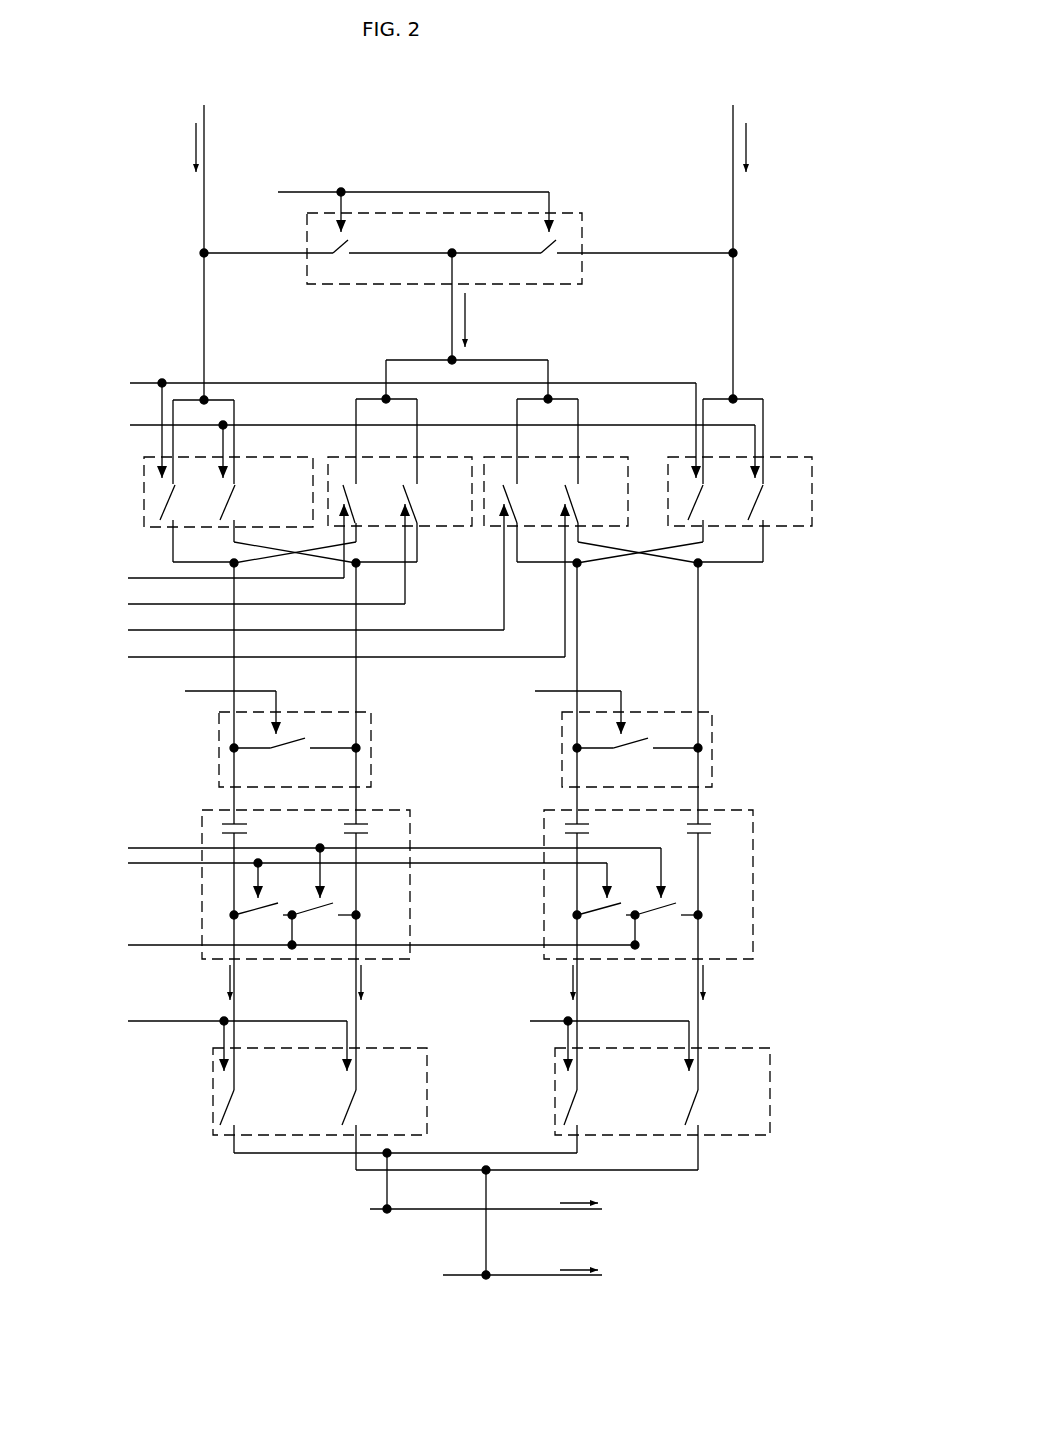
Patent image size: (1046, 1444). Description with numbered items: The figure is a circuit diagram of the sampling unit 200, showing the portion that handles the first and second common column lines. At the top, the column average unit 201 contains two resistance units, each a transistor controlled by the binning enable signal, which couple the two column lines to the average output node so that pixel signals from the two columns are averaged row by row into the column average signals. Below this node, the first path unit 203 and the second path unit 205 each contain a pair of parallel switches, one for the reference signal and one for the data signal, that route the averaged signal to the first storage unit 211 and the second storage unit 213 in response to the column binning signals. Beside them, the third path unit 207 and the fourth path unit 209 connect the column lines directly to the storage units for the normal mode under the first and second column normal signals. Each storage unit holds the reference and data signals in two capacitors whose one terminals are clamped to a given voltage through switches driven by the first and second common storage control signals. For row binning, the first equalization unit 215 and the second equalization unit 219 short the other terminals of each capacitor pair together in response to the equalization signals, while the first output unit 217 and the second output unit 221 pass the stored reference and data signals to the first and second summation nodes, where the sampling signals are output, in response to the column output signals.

The sampling unit 200 is at (120, 46).
The column average unit 201 is at (560, 216).
The first path unit 203 is at (585, 461).
The second path unit 205 is at (430, 461).
The third path unit 207 is at (770, 461).
The fourth path unit 209 is at (250, 461).
The first storage unit 211 is at (713, 812).
The second storage unit 213 is at (370, 812).
The first equalization unit 215 is at (712, 748).
The first output unit 217 is at (770, 1100).
The second equalization unit 219 is at (371, 748).
The second output unit 221 is at (427, 1100).